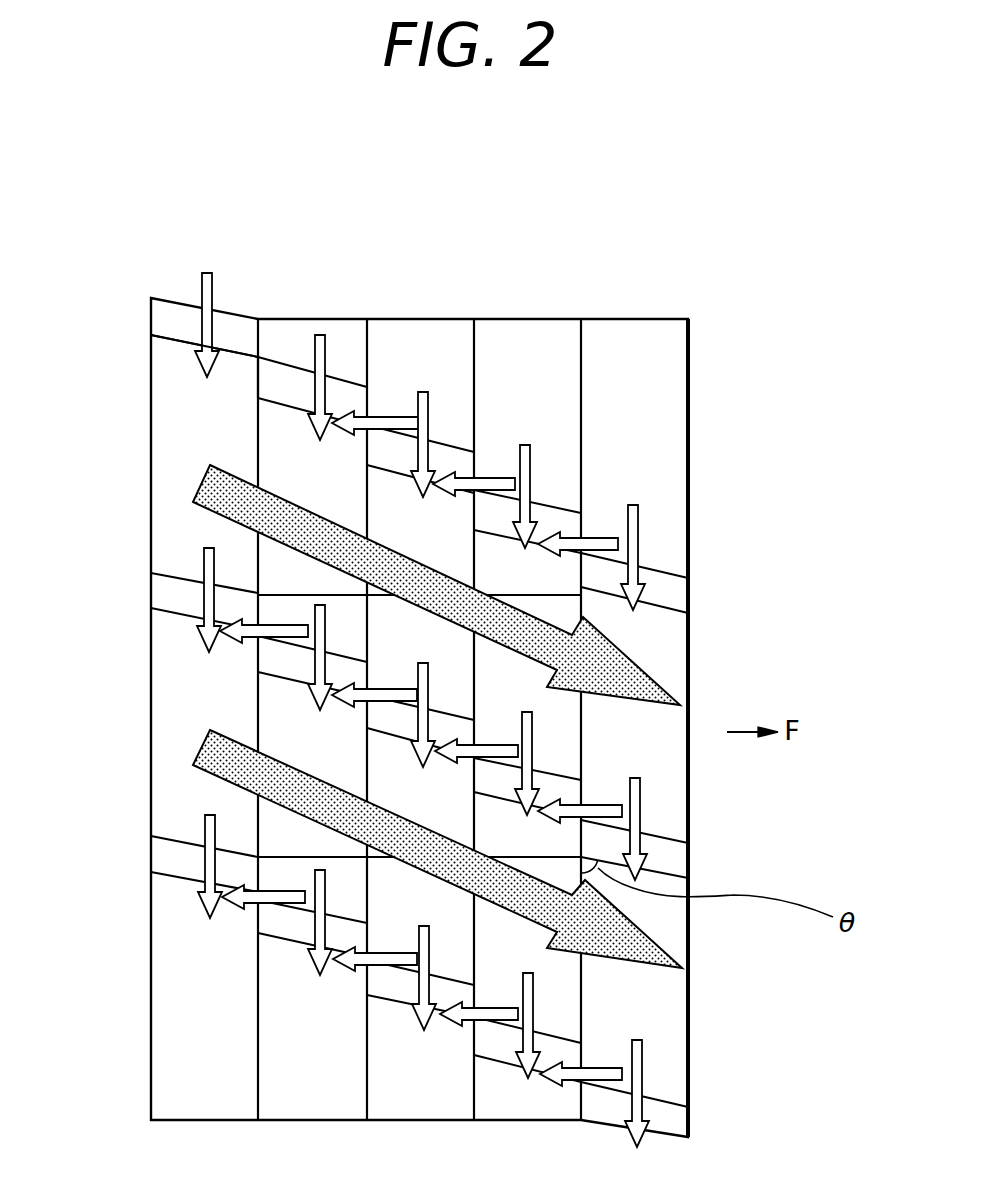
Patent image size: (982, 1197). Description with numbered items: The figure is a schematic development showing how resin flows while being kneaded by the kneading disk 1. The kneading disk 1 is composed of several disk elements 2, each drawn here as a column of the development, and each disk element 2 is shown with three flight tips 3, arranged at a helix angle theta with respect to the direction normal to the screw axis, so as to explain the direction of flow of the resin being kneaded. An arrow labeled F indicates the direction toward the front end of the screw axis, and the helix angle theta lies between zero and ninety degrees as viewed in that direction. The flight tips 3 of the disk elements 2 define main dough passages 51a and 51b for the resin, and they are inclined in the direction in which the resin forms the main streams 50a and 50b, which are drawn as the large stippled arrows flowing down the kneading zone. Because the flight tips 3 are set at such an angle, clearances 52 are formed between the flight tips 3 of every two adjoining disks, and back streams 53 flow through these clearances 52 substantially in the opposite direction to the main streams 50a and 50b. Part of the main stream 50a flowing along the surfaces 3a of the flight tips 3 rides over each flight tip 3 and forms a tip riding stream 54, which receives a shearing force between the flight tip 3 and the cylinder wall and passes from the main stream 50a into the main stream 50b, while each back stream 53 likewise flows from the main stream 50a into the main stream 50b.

The kneading disk 1 is at (578, 202).
The disk element 2 is at (635, 317).
The flight tip 3 is at (672, 590).
The surface of flight tip 3a is at (670, 570).
The main stream 50a is at (650, 673).
The main stream 50b is at (653, 943).
The main dough passage 51a is at (118, 338).
The main dough passage 51b is at (118, 594).
The clearance 52 is at (253, 360).
The back stream 53 is at (382, 420).
The tip riding stream 54 is at (207, 272).